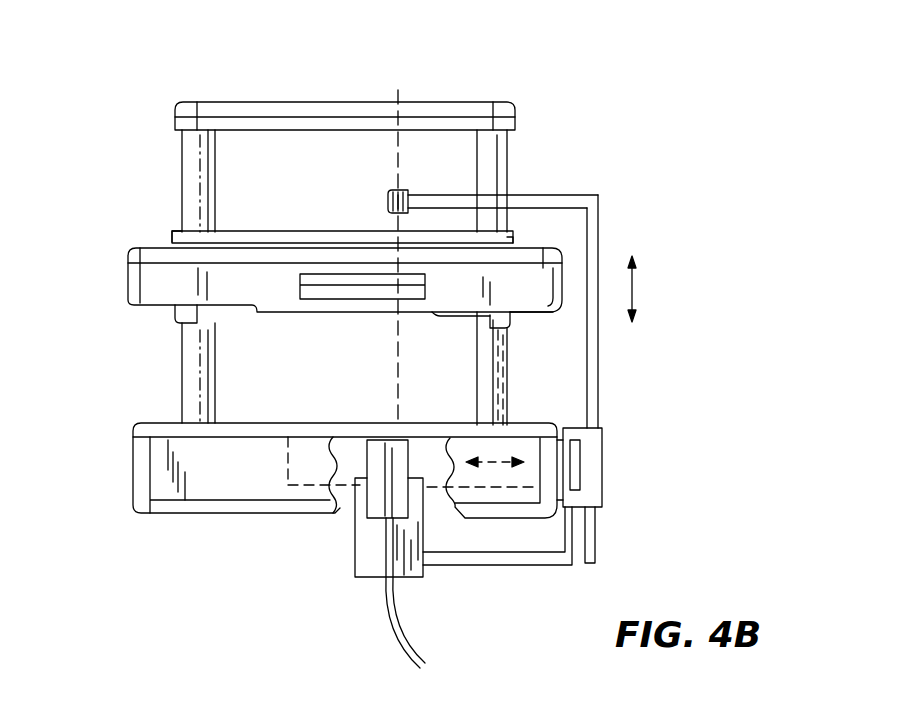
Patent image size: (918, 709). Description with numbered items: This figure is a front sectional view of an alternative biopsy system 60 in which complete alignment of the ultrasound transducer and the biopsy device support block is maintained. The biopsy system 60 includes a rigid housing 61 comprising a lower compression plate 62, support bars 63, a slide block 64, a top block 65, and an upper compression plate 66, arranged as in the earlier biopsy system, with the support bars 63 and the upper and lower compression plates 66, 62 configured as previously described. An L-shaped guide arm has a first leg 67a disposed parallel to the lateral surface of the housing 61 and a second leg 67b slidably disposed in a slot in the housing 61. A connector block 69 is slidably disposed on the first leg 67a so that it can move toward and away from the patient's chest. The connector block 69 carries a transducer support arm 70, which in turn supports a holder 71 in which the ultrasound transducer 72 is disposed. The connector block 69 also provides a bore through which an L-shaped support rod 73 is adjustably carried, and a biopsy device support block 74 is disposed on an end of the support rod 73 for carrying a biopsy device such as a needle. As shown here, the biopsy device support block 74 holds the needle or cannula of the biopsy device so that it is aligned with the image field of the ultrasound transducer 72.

The biopsy system 60 is at (588, 126).
The rigid housing 61 is at (133, 467).
The lower compression plate 62 is at (259, 423).
The support bars 63 is at (181, 166).
The slide block 64 is at (243, 232).
The top block 65 is at (232, 102).
The upper compression plate 66 is at (127, 266).
The first leg 67a is at (582, 462).
The second leg 67b is at (292, 488).
The connector block 69 is at (607, 428).
The transducer support arm 70 is at (490, 564).
The holder 71 is at (401, 572).
The ultrasound transducer 72 is at (368, 500).
The L-shaped support rod 73 is at (599, 205).
The biopsy device support block 74 is at (421, 194).